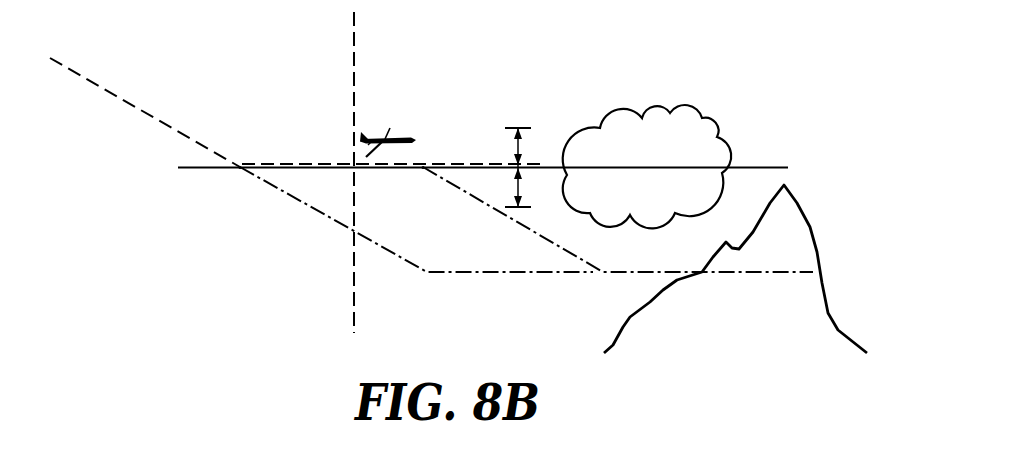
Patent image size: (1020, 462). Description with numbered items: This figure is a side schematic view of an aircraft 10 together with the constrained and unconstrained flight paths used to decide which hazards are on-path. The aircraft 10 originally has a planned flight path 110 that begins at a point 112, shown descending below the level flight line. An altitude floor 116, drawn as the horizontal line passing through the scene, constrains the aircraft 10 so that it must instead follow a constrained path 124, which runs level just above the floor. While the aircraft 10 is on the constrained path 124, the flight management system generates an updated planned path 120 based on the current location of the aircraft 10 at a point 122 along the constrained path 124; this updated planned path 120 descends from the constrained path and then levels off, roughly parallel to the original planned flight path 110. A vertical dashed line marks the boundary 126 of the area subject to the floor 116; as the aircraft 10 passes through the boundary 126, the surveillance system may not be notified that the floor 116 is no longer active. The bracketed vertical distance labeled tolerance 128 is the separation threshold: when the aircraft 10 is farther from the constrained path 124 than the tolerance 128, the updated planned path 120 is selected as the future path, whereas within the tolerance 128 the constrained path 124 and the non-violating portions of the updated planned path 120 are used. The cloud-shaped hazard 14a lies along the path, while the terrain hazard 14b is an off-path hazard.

The aircraft 10 is at (410, 137).
The hazard 14a is at (617, 112).
The hazard 14b is at (816, 233).
The planned flight path 110 is at (313, 210).
The point 112 is at (240, 170).
The altitude floor 116 is at (752, 167).
The updated planned path 120 is at (512, 221).
The points 122 is at (424, 166).
The constrained path 124 is at (314, 163).
The boundary 126 is at (364, 49).
The tolerance 128 is at (525, 188).